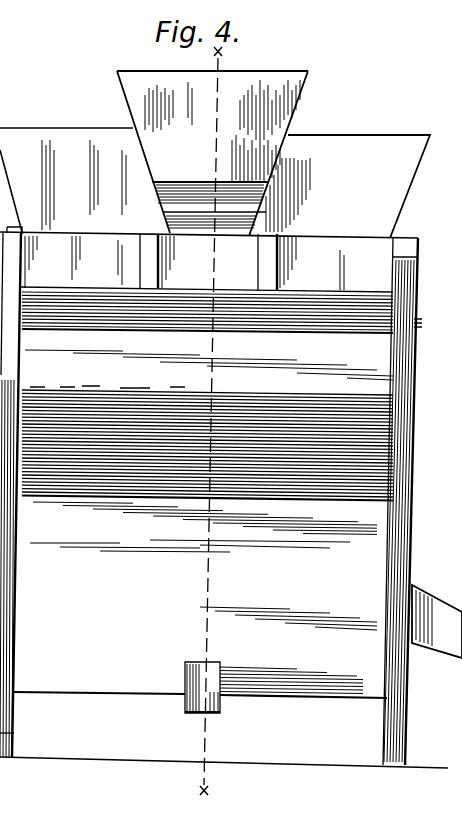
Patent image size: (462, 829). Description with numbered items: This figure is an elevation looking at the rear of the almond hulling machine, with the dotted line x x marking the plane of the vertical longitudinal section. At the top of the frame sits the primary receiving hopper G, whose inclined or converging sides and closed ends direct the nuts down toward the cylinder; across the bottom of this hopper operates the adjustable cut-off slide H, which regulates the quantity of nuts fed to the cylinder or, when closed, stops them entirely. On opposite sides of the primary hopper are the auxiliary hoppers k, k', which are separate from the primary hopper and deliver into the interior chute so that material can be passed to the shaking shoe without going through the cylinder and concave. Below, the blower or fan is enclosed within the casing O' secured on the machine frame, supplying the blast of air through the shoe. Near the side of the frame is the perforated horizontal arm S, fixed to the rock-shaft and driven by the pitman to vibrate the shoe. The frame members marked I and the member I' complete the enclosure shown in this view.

The primary receiving hopper G is at (212, 153).
The adjustable cut-off slide H is at (190, 180).
The auxiliary hopper k is at (66, 180).
The auxiliary hopper k' is at (348, 186).
The casing O' is at (207, 461).
The perforated horizontal arm S is at (418, 327).
The frame I is at (224, 500).
The door flap I' is at (437, 621).